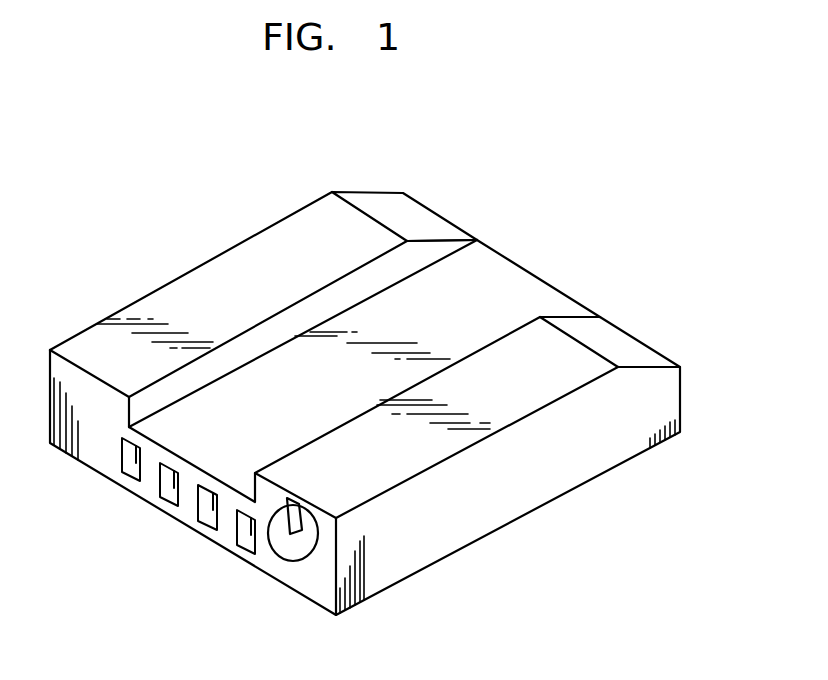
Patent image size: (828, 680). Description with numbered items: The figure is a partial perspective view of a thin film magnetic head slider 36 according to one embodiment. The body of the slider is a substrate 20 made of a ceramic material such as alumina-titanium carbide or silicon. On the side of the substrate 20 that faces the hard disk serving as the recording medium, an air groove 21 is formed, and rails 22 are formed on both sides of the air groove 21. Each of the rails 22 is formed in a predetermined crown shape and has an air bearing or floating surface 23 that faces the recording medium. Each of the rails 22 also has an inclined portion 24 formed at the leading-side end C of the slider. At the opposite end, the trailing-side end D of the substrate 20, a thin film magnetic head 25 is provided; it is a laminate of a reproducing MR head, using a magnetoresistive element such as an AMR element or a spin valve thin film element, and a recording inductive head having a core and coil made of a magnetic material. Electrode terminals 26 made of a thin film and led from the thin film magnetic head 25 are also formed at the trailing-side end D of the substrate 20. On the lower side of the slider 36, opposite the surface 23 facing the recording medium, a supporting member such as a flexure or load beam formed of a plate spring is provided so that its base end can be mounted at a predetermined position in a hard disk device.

The substrate 20 is at (478, 272).
The air groove 21 is at (532, 308).
The rails 22 is at (176, 264).
The air bearing surface 23 is at (270, 257).
The inclined portion 24 is at (387, 208).
The thin film magnetic head 25 is at (290, 543).
The electrode terminals 26 is at (247, 520).
The thin film magnetic head slider 36 is at (558, 268).
The leading-side end C is at (489, 226).
The trailing-side end D is at (180, 537).